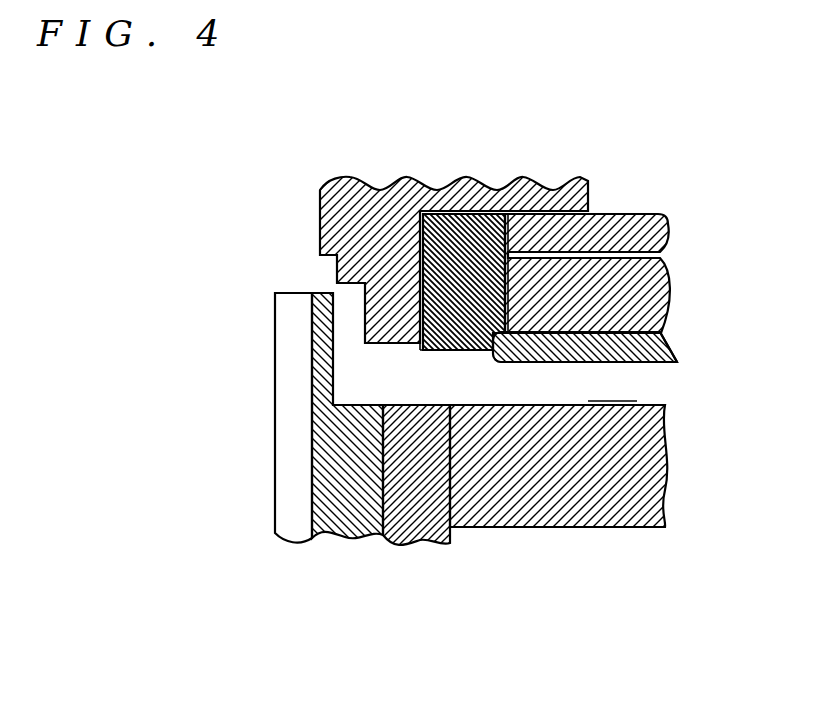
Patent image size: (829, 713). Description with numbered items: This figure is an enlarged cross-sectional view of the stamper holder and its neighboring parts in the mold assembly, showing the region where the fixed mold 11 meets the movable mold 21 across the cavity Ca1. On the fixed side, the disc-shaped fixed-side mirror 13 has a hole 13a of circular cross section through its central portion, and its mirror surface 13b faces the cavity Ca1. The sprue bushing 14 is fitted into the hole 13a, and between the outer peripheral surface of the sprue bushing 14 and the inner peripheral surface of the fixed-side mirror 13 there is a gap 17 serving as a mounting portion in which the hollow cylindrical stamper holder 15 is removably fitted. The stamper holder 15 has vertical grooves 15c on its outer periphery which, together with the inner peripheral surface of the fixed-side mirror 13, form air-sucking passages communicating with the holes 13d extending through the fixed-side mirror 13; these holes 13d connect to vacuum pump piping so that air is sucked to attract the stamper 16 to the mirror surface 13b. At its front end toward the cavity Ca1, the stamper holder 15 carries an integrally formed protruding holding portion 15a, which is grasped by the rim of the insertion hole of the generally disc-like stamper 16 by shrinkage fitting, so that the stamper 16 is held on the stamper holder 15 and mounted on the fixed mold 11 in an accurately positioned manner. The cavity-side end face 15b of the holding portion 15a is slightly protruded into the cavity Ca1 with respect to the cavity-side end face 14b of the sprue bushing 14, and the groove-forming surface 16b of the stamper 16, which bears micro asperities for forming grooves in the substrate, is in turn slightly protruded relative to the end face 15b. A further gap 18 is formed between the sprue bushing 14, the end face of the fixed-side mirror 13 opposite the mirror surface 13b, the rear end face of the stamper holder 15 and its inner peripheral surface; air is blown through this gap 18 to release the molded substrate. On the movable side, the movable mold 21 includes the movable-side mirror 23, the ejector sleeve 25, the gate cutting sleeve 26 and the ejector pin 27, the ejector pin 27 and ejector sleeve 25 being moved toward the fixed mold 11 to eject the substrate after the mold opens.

The fixed mold 11 is at (539, 277).
The fixed-side mirror 13 is at (648, 243).
The hole 13a is at (512, 237).
The mirror surface 13b is at (641, 336).
The holes 13d is at (667, 258).
The sprue bushing 14 is at (578, 178).
The cavity-side end face 14b is at (375, 346).
The stamper holder 15 is at (473, 261).
The holding portion 15a is at (512, 347).
The cavity-side end face 15b is at (457, 355).
The vertical grooves 15c is at (497, 264).
The stamper 16 is at (672, 350).
The groove-forming surface 16b is at (665, 365).
The gap 17 is at (437, 352).
The gap 18 is at (591, 210).
The movable mold 21 is at (501, 466).
The movable-side mirror 23 is at (523, 527).
The ejector sleeve 25 is at (420, 538).
The gate cutting sleeve 26 is at (358, 530).
The ejector pin 27 is at (292, 534).
The cavity Ca1 is at (612, 390).